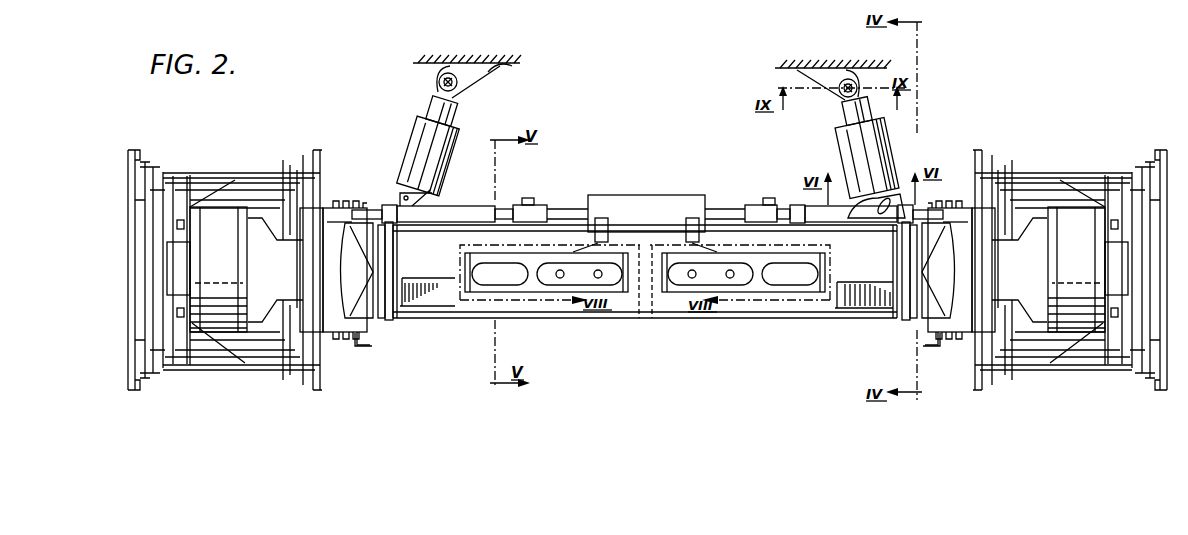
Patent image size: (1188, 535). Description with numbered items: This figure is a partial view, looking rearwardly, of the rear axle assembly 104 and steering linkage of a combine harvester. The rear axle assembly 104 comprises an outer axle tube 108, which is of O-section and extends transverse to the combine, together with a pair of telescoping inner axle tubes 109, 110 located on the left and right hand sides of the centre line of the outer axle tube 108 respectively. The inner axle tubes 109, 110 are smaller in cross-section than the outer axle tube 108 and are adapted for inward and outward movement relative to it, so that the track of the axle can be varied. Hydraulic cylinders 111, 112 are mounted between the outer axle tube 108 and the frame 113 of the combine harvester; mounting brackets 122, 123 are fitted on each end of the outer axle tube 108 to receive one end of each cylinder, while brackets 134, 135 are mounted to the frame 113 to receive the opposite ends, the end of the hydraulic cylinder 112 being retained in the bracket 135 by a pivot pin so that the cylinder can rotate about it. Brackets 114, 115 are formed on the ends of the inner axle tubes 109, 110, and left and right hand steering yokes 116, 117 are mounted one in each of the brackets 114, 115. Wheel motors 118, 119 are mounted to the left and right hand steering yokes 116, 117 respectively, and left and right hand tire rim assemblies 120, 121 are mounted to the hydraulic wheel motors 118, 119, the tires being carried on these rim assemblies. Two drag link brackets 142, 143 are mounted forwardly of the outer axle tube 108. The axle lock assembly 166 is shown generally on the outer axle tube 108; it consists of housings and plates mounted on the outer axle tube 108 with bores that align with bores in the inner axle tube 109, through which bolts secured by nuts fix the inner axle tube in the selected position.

The rear axle assembly 104 is at (654, 324).
The outer axle tube 108 is at (771, 320).
The inner axle tube 109 is at (647, 240).
The inner axle tube 110 is at (652, 240).
The hydraulic cylinder 111 is at (452, 163).
The hydraulic cylinder 112 is at (838, 152).
The frame 113 is at (512, 67).
The bracket 114 is at (364, 342).
The bracket 115 is at (916, 328).
The steering yoke 116 is at (330, 200).
The steering yoke 117 is at (965, 210).
The wheel motor 118 is at (230, 210).
The wheel motor 119 is at (1080, 215).
The tire rim assembly 120 is at (243, 367).
The tire rim assembly 121 is at (1070, 372).
The mounting bracket 122 is at (441, 207).
The mounting bracket 123 is at (918, 200).
The bracket 134 is at (508, 62).
The bracket 135 is at (873, 45).
The drag link bracket 142 is at (443, 310).
The drag link bracket 143 is at (851, 312).
The axle lock assembly 166 is at (563, 240).